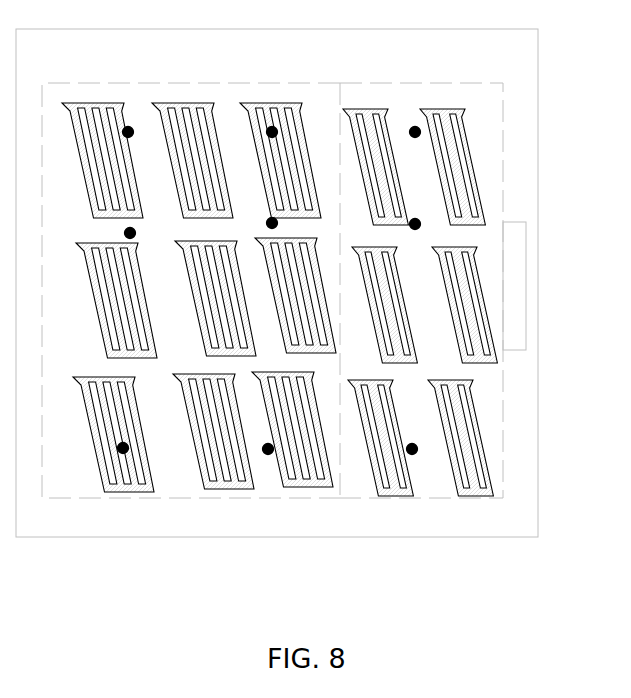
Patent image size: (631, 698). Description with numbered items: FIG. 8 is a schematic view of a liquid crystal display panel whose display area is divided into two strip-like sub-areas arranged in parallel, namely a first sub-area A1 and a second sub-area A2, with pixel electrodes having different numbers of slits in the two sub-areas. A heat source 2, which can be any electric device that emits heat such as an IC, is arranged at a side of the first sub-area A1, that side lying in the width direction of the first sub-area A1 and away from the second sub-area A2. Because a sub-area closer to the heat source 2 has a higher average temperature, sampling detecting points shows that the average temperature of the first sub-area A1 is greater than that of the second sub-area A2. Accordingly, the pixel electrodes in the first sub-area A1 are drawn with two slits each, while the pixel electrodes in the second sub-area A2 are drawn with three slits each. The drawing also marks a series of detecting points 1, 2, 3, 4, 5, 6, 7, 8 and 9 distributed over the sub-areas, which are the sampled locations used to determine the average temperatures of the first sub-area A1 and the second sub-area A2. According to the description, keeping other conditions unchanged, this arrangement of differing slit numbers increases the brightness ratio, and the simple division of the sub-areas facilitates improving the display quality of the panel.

The first position point 1 is at (135, 147).
The heat source 2 is at (519, 232).
The third position point 3 is at (419, 151).
The fourth position point 4 is at (141, 240).
The fifth position point 5 is at (273, 242).
The sixth position point 6 is at (416, 244).
The seventh position point 7 is at (124, 467).
The eighth position point 8 is at (272, 468).
The ninth position point 9 is at (417, 468).
The first sub-area A1 is at (440, 490).
The second sub-area A2 is at (184, 493).